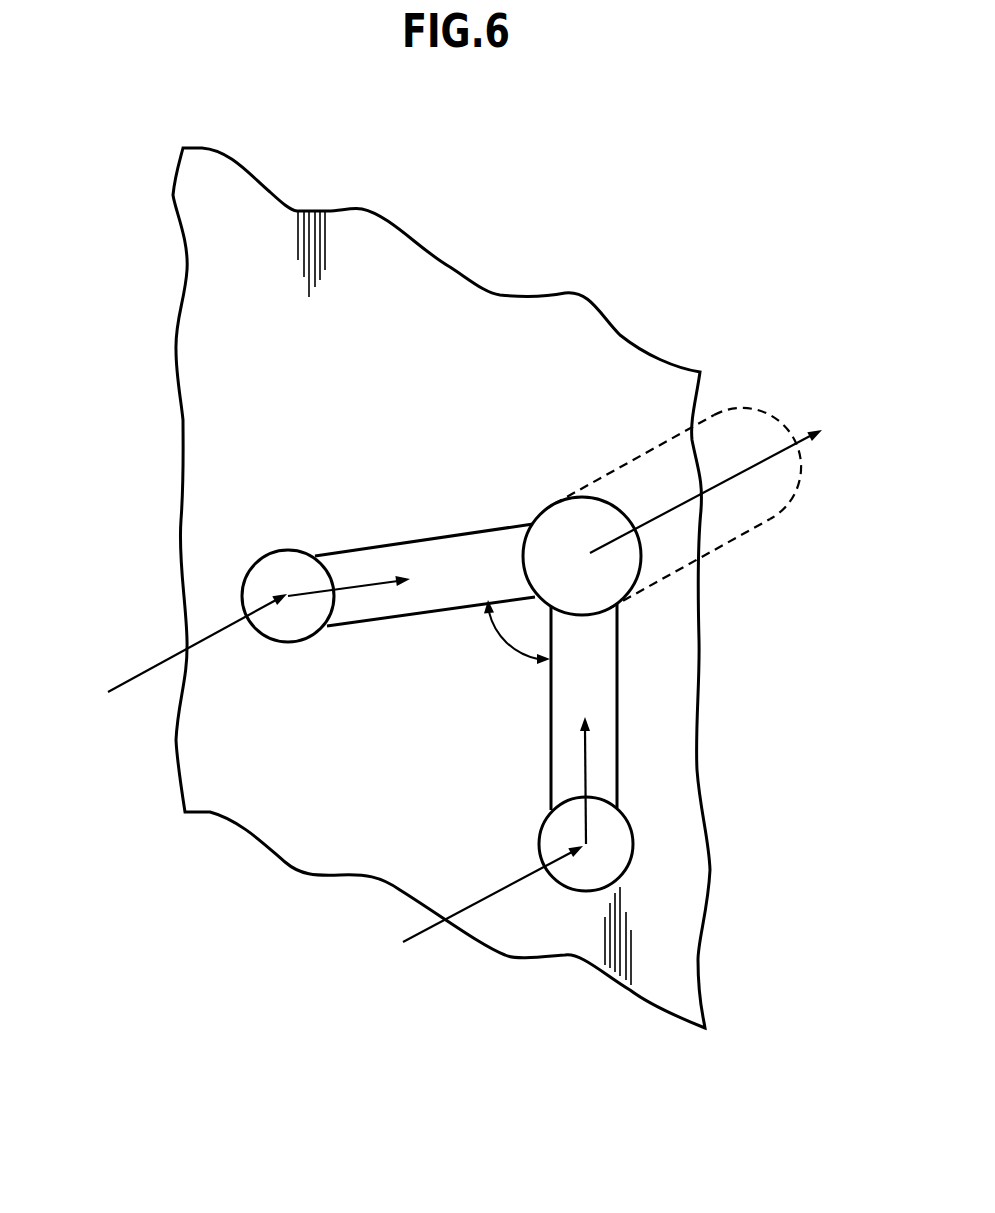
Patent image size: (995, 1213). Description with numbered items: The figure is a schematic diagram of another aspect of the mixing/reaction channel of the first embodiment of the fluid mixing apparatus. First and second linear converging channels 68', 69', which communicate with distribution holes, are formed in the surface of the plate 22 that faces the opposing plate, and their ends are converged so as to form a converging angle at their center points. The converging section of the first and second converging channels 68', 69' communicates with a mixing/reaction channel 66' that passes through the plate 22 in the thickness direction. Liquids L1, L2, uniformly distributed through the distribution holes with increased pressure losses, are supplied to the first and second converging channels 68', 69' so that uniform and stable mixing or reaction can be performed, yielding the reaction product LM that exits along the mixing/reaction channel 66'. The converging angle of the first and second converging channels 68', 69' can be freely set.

The plate 22 is at (208, 413).
The second converging channel 69' is at (441, 544).
The first converging channel 68' is at (670, 747).
The mixing/reaction channel 66' is at (691, 508).
The reaction product LM is at (741, 472).
The liquid L1 is at (467, 913).
The liquid L2 is at (168, 658).